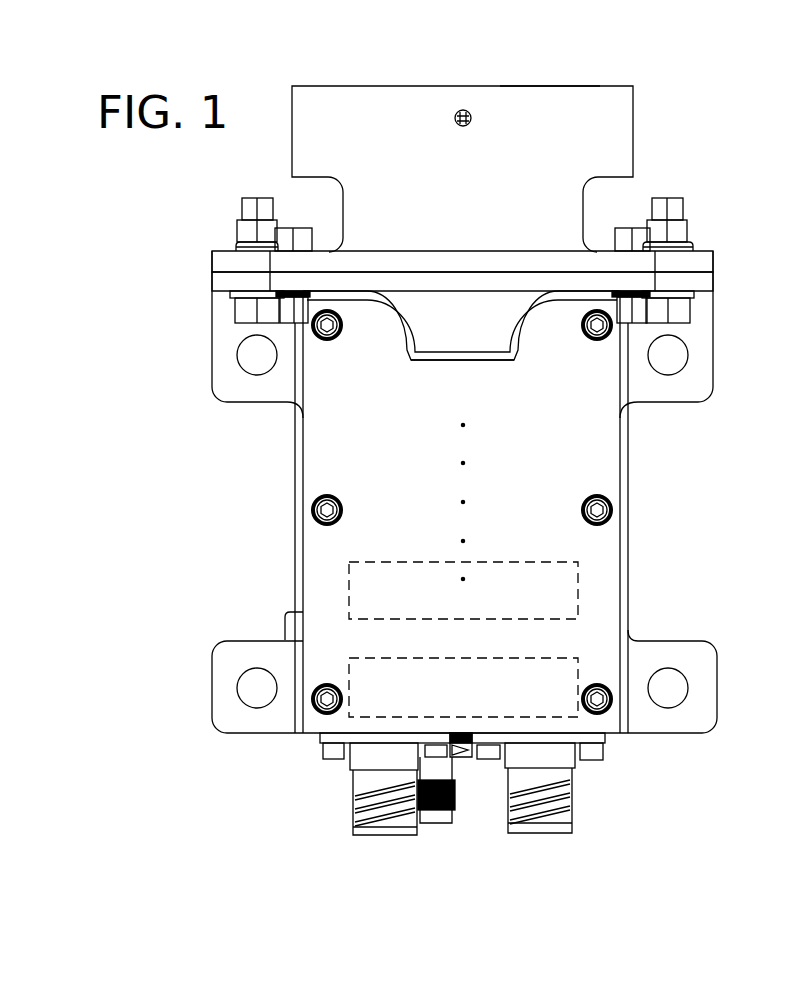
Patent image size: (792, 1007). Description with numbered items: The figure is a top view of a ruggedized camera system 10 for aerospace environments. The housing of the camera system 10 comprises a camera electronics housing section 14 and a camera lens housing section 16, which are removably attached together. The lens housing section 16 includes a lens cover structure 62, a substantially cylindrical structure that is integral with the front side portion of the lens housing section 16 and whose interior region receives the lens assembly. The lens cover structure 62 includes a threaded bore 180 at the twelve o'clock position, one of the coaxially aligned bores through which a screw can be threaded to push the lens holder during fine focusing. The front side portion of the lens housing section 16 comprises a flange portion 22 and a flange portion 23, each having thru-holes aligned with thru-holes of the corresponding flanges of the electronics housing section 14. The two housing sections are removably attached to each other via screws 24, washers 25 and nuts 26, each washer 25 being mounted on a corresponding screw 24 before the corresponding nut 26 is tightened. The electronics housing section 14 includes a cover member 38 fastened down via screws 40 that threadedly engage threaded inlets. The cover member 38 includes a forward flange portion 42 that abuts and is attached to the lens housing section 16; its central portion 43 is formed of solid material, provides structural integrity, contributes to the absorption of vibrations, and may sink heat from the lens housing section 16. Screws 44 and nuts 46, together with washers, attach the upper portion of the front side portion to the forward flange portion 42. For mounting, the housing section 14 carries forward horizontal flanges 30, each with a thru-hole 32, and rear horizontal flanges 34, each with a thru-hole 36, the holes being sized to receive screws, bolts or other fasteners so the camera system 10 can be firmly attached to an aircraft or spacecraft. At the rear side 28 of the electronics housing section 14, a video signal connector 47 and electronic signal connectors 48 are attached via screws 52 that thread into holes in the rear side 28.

The ruggedized camera system 10 is at (397, 38).
The camera electronics housing section 14 is at (300, 516).
The camera lens housing section 16 is at (635, 128).
The flange portion 22 is at (220, 258).
The flange portion 23 is at (707, 262).
The screw 24 is at (238, 307).
The washer 25 is at (236, 247).
The nut 26 is at (245, 230).
The rear side 28 is at (612, 736).
The forward horizontal flange 30 is at (218, 350).
The thru-hole 32 is at (256, 358).
The rear horizontal flange 34 is at (213, 690).
The thru-hole 36 is at (256, 695).
The cover member 38 is at (607, 567).
The screw 40 is at (324, 341).
The forward flange portion 42 is at (330, 282).
The central portion 43 is at (457, 362).
The screw 44 is at (298, 235).
The nut 46 is at (278, 302).
The video signal connector 47 is at (436, 828).
The electronic signal connector 48 is at (360, 829).
The screw 52 is at (332, 761).
The lens cover structure 62 is at (545, 86).
The threaded bore 180 is at (463, 110).